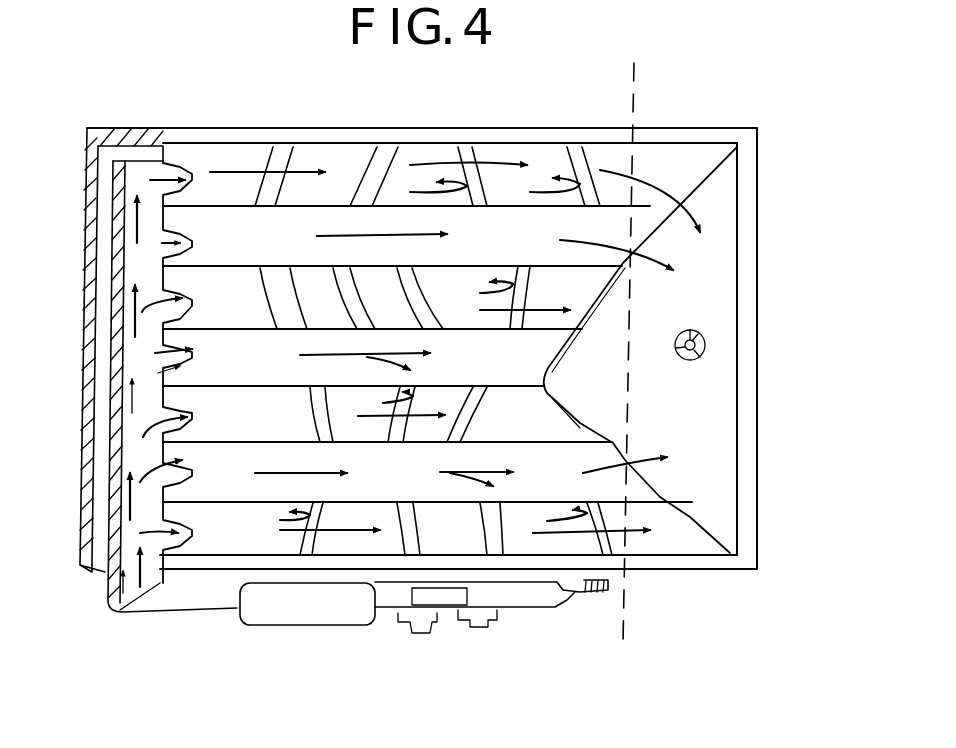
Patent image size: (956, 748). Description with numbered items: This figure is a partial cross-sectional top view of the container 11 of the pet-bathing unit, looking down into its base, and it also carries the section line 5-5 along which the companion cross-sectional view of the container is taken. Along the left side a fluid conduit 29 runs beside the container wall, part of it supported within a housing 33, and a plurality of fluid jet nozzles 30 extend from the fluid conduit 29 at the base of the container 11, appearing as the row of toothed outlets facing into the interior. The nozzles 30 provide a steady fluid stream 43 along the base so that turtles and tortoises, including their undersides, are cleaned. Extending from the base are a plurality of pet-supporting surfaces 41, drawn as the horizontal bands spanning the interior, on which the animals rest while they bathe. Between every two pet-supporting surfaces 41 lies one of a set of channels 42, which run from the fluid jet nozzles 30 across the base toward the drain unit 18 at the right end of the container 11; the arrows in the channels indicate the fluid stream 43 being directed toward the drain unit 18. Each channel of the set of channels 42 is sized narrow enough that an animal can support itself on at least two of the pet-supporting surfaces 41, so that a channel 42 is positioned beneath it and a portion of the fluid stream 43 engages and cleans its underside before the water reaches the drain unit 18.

The container 11 is at (758, 128).
The drain unit 18 is at (712, 343).
The fluid conduit 29 is at (182, 600).
The fluid jet nozzles 30 is at (163, 345).
The housing 33 is at (80, 565).
The pet-supporting surfaces 41 is at (160, 457).
The set of channels 42 is at (578, 418).
The fluid stream 43 is at (428, 165).
The section line 5- 5 is at (634, 63).